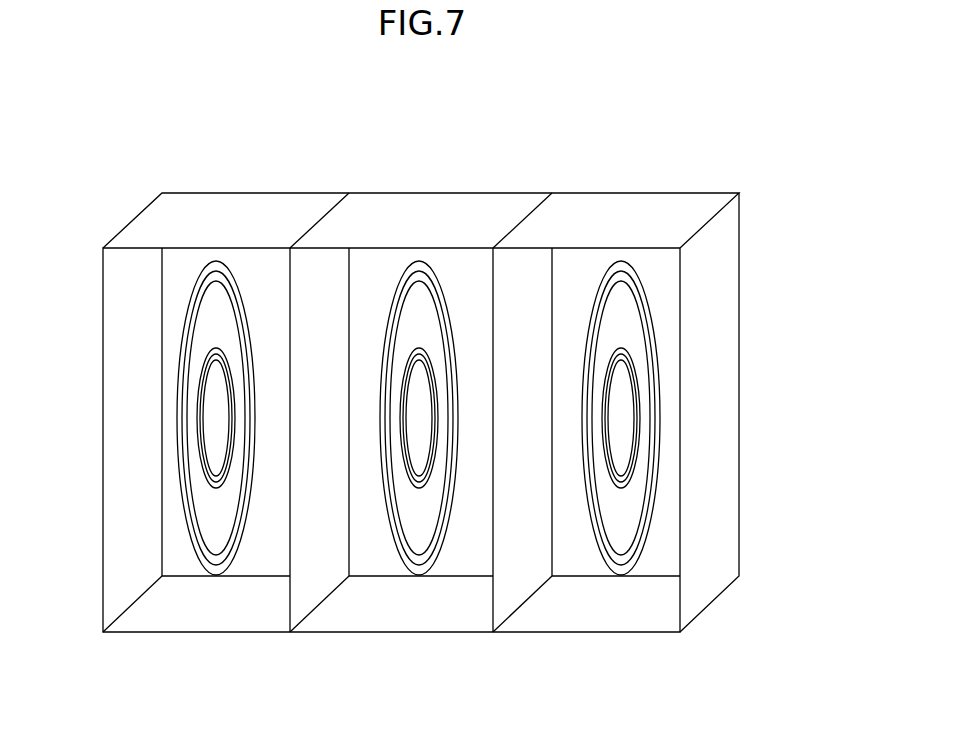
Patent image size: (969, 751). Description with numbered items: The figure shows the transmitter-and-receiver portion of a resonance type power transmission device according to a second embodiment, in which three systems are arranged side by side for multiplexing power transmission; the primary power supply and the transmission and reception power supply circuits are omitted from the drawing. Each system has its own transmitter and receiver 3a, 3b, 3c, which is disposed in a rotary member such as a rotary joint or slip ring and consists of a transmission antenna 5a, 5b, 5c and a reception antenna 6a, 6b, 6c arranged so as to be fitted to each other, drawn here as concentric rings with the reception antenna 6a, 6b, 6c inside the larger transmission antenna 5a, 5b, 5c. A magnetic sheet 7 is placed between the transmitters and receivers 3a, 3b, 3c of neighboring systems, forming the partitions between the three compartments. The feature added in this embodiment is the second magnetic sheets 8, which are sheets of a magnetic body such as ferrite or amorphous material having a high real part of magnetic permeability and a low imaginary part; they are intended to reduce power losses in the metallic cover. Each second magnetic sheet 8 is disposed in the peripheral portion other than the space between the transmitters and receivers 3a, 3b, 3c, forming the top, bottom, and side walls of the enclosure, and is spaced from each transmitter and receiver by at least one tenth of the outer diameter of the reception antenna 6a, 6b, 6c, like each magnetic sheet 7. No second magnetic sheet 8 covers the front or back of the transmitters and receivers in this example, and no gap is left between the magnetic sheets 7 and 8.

The second magnetic sheet 8 is at (223, 210).
The magnetic sheet 7 is at (326, 295).
The transmitter and receiver 3a is at (142, 418).
The transmission antenna 5a is at (188, 298).
The reception antenna 6a is at (205, 370).
The transmitter and receiver 3b is at (443, 344).
The transmission antenna 5b is at (435, 270).
The reception antenna 6b is at (412, 350).
The transmitter and receiver 3c is at (698, 418).
The transmission antenna 5c is at (653, 333).
The reception antenna 6c is at (637, 388).